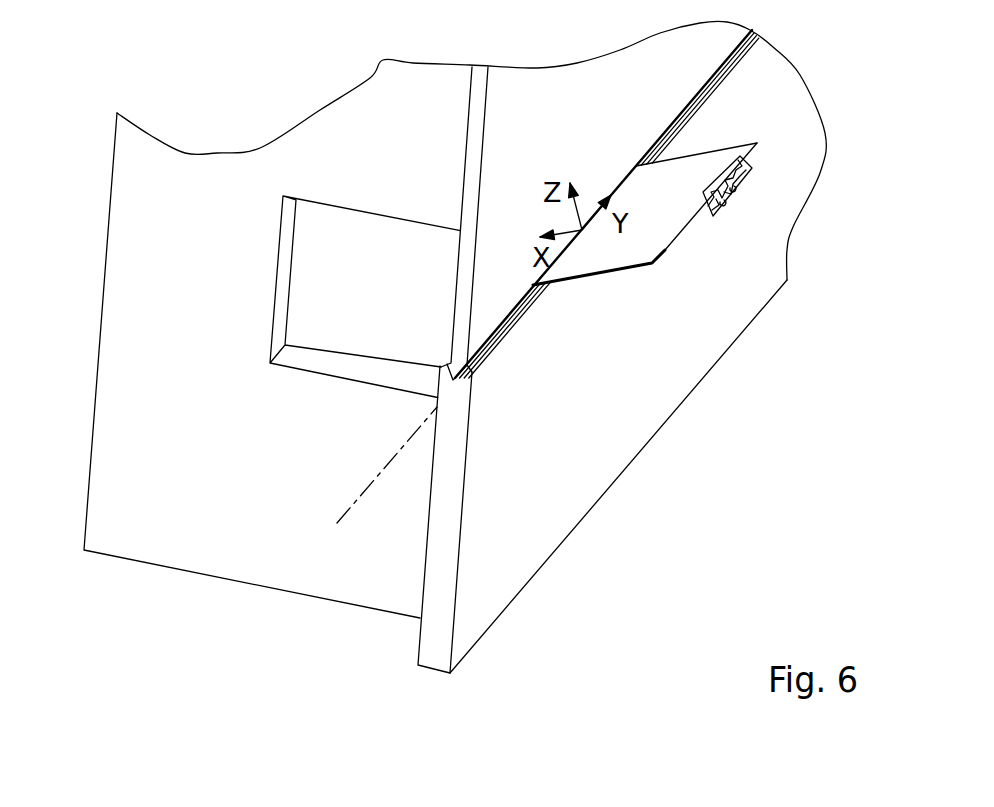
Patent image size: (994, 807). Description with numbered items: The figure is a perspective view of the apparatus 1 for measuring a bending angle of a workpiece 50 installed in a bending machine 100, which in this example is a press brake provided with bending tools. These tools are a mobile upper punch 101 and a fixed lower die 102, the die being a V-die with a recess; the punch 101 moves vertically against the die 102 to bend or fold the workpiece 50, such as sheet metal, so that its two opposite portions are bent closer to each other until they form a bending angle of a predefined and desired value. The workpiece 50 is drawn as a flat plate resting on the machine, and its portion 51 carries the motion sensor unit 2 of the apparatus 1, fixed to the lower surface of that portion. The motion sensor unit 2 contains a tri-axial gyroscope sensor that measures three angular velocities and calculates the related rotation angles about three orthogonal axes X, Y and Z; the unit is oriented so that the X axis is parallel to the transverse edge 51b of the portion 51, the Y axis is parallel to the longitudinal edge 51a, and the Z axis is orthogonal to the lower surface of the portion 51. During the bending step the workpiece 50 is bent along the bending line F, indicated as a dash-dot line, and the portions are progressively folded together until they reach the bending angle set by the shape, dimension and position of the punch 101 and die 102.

The bending machine 100 is at (200, 113).
The mobile upper punch 101 is at (470, 180).
The fixed lower die 102 is at (442, 552).
The apparatus 1 is at (785, 142).
The motion sensor unit 2 is at (721, 207).
The workpiece 50 is at (686, 272).
The portion of the workpiece 51 is at (686, 272).
The longitudinal edge 51a is at (723, 215).
The transverse edge 51b is at (630, 267).
The bending line F is at (373, 477).